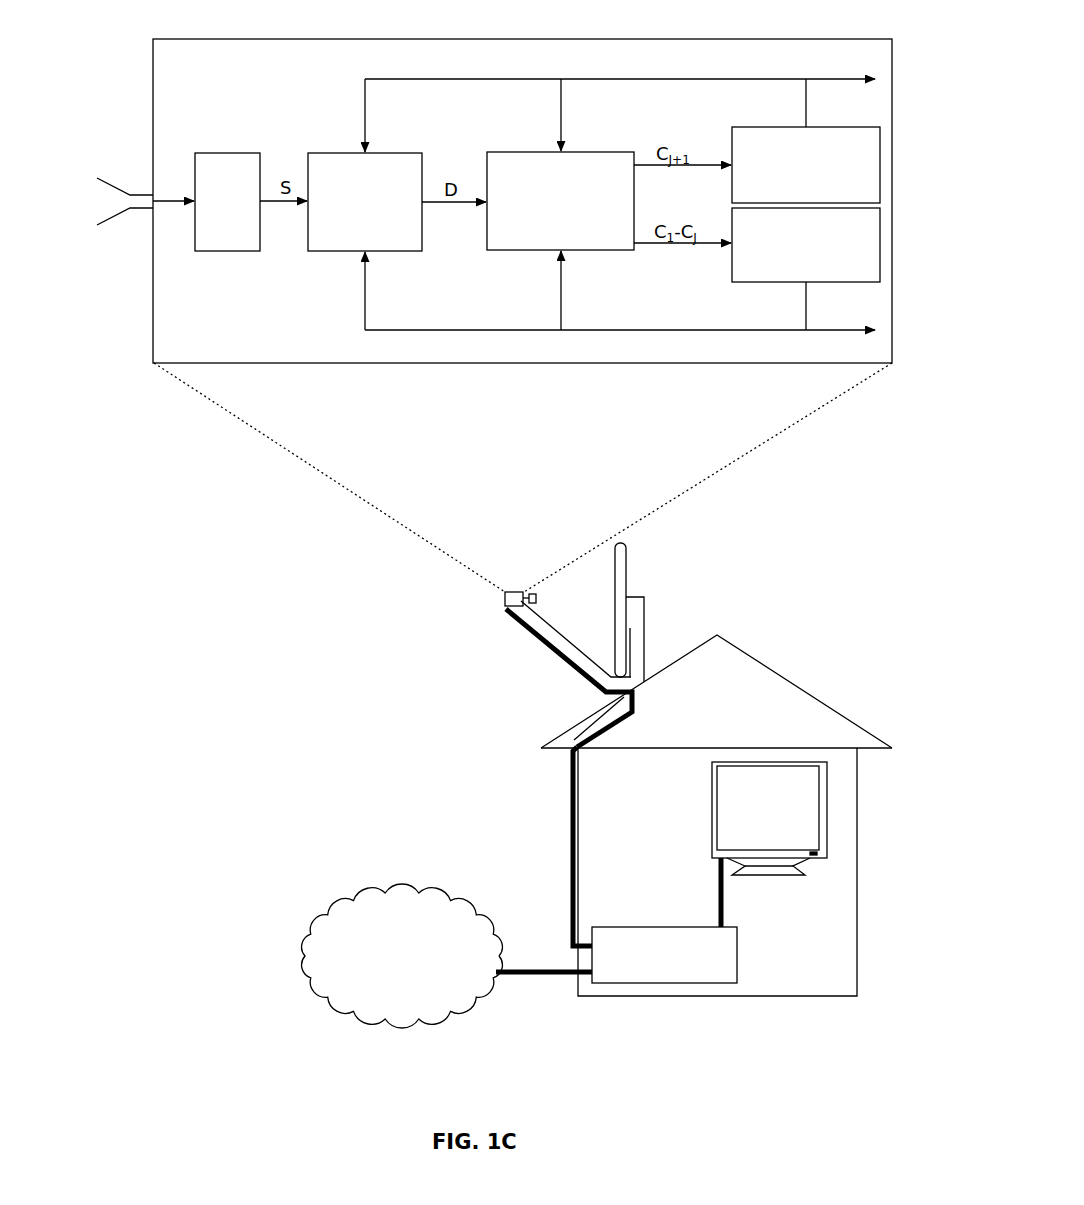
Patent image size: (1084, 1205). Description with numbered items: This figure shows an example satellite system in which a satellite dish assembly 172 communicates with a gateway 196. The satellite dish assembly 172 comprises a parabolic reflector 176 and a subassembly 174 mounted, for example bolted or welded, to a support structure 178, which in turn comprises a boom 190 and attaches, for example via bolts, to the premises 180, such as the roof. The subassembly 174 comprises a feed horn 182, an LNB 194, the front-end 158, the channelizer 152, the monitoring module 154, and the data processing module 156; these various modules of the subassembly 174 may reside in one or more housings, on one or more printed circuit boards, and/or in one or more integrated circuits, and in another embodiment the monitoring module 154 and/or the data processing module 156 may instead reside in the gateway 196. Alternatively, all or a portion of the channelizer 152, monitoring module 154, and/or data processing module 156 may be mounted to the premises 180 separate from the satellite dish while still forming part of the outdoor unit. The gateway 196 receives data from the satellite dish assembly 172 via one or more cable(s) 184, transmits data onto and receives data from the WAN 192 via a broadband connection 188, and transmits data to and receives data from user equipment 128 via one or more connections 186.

The subassembly 174 is at (341, 39).
The feed horn 182 is at (130, 188).
The LNB 194 is at (228, 153).
The front-end 158 is at (365, 202).
The channelizer 152 is at (560, 201).
The monitoring module 154 is at (806, 165).
The data processing module 156 is at (806, 245).
The satellite dish assembly 172 is at (534, 546).
The parabolic reflector 176 is at (627, 576).
The support structure 178 is at (644, 631).
The boom 190 is at (562, 644).
The premises 180 is at (781, 680).
The user equipment 128 is at (712, 812).
The cable(s) 184 is at (572, 864).
The connections 186 is at (723, 898).
The broadband connection 188 is at (536, 970).
The gateway 196 is at (664, 955).
The WAN 192 is at (402, 956).